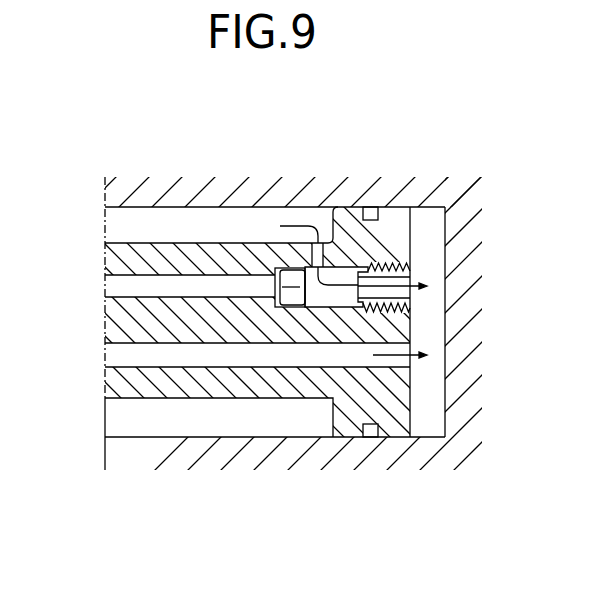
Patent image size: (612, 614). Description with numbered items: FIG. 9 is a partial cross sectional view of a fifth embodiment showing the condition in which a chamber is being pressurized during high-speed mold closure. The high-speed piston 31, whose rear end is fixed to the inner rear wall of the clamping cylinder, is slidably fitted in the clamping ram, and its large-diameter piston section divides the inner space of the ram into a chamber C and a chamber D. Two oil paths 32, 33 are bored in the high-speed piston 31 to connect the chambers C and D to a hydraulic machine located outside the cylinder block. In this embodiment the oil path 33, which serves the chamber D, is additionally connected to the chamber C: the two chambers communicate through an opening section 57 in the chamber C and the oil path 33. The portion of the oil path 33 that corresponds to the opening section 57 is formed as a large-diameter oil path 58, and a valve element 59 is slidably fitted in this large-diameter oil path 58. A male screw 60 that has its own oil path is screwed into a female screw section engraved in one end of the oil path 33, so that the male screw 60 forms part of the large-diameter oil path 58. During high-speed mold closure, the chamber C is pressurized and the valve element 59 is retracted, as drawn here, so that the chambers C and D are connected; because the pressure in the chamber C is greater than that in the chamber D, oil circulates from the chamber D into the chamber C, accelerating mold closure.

The chamber D is at (128, 218).
The chamber C is at (440, 215).
The high-speed piston 31 is at (180, 248).
The oil path 32 is at (115, 354).
The oil path 33 is at (112, 288).
The opening section 57 is at (320, 243).
The large-diameter oil path 58 is at (343, 299).
The valve element 59 is at (290, 268).
The male screw 60 is at (410, 272).